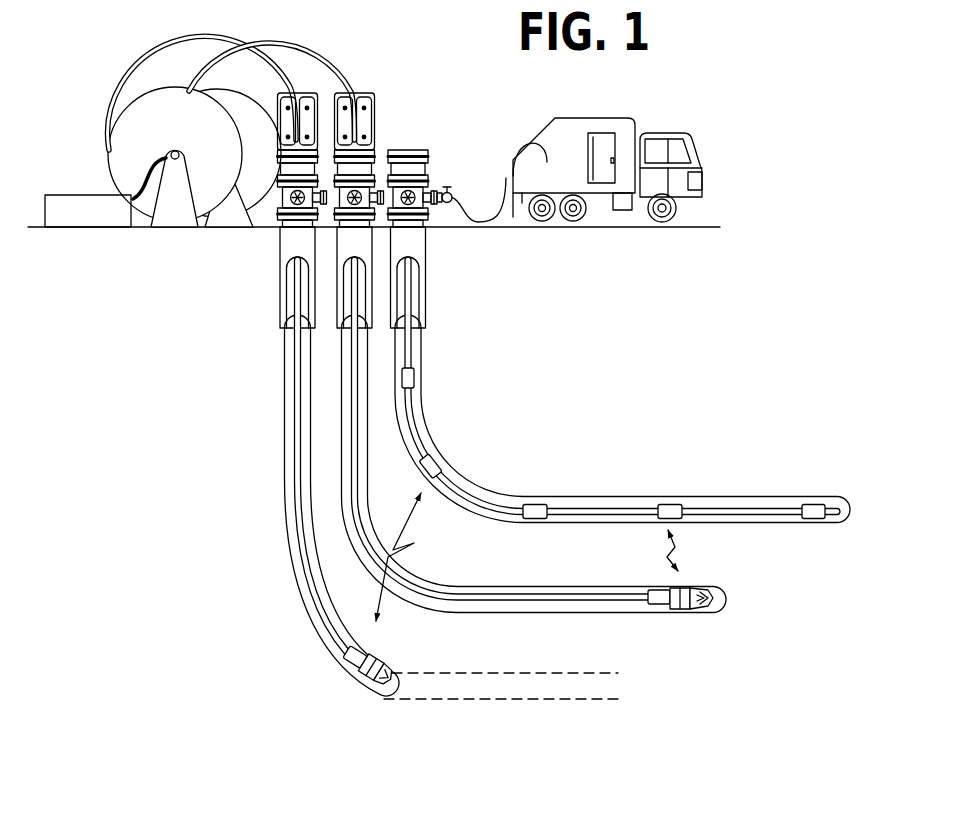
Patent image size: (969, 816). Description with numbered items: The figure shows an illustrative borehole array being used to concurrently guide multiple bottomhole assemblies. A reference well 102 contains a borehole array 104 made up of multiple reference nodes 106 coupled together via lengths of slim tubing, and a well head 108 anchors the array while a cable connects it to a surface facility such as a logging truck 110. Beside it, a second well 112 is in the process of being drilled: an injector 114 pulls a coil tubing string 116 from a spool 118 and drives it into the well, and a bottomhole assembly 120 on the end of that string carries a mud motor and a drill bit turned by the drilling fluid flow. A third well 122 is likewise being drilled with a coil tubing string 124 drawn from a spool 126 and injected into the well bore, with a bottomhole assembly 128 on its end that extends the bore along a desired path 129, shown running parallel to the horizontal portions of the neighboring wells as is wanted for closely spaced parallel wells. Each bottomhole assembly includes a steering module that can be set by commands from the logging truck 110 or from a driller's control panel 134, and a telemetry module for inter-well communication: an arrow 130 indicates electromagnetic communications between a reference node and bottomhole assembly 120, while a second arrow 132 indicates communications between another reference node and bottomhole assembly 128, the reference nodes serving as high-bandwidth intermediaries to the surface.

The reference well 102 is at (426, 276).
The borehole array 104 is at (413, 349).
The reference nodes 106 is at (526, 506).
The well head 108 is at (428, 160).
The logging truck 110 is at (607, 119).
The second well 112 is at (457, 583).
The injector 114 is at (372, 100).
The coil tubing string 116 is at (299, 40).
The spool 118 is at (267, 122).
The bottomhole assembly 120 is at (675, 604).
The third well 122 is at (282, 258).
The coil tubing string 124 is at (137, 75).
The spool 126 is at (183, 126).
The bottomhole assembly 128 is at (349, 679).
The desired path 129 is at (533, 669).
The arrow 130 is at (683, 542).
The arrow 132 is at (389, 604).
The driller's control panel 134 is at (70, 195).